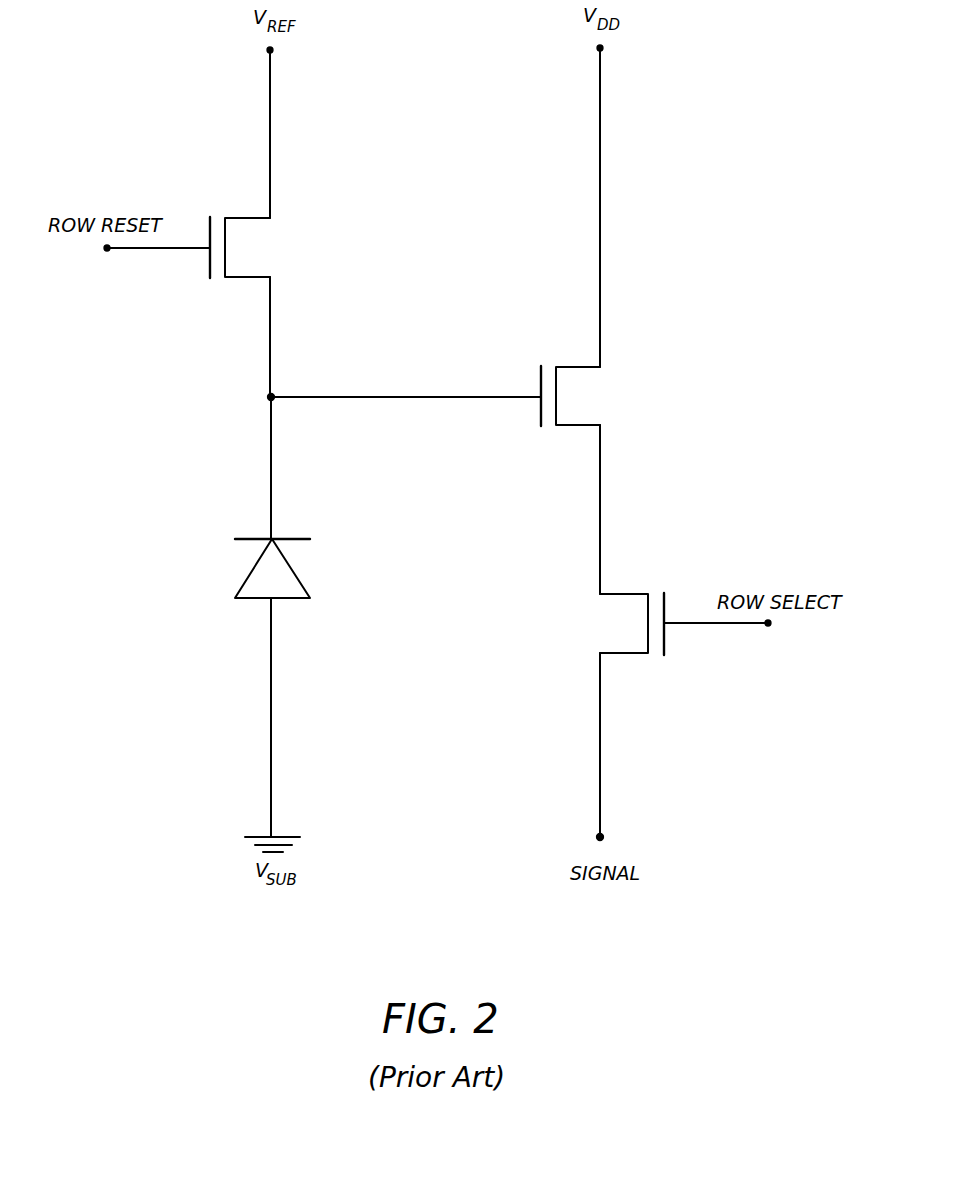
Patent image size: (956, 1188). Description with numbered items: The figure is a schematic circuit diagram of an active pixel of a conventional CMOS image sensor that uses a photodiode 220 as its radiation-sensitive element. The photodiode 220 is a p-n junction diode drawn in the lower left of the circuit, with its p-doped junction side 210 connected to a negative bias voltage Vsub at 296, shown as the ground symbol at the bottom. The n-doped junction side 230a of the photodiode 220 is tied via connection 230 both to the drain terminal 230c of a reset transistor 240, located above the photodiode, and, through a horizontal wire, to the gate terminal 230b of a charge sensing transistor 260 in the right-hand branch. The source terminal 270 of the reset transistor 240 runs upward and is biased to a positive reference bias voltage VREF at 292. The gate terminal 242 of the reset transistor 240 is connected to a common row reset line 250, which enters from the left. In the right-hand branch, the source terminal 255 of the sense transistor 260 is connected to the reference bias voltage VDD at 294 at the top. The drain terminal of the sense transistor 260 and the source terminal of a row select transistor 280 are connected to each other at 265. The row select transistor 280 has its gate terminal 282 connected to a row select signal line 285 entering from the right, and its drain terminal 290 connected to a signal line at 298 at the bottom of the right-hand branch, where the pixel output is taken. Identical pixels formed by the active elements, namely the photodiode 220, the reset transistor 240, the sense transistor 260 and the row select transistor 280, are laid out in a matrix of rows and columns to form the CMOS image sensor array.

The p-doped junction side 210 is at (290, 600).
The photodiode 220 is at (240, 598).
The connection 230 is at (271, 397).
The n-doped junction side 230a is at (252, 537).
The gate terminal of charge sensing transistor 230b is at (538, 400).
The drain terminal of reset transistor 230c is at (271, 340).
The reset transistor 240 is at (262, 250).
The gate terminal of reset transistor 242 is at (158, 248).
The common row reset line 250 is at (107, 248).
The source terminal of sense transistor 255 is at (600, 205).
The charge sensing transistor 260 is at (612, 398).
The connection between sense transistor drain and row select transistor source 265 is at (600, 510).
The source terminal of reset transistor 270 is at (270, 148).
The row select transistor 280 is at (606, 623).
The gate terminal of row select transistor 282 is at (718, 627).
The row select signal line 285 is at (768, 623).
The drain terminal of row select transistor 290 is at (603, 745).
The positive reference bias voltage VREF node 292 is at (270, 50).
The reference bias voltage VDD node 294 is at (600, 48).
The negative bias voltage Vsub node 296 is at (283, 837).
The signal line 298 is at (603, 837).